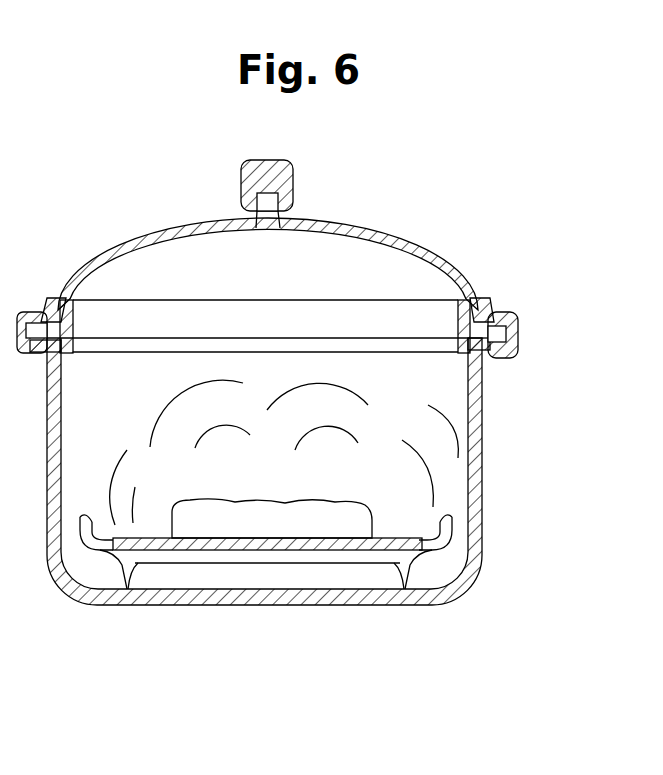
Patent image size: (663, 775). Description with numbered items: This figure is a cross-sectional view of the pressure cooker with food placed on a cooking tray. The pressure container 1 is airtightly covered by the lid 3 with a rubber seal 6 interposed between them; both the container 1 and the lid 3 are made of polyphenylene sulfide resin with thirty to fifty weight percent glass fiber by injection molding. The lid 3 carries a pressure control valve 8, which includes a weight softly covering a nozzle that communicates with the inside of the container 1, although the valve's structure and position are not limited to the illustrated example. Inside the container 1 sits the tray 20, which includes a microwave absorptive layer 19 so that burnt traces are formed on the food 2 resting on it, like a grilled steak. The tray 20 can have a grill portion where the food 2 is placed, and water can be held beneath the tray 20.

The pressure container 1 is at (482, 428).
The food 2 is at (258, 523).
The lid 3 is at (462, 273).
The rubber seal 6 is at (487, 310).
The pressure control valve 8 is at (300, 180).
The microwave absorptive layer 19 is at (380, 550).
The tray 20 is at (187, 558).